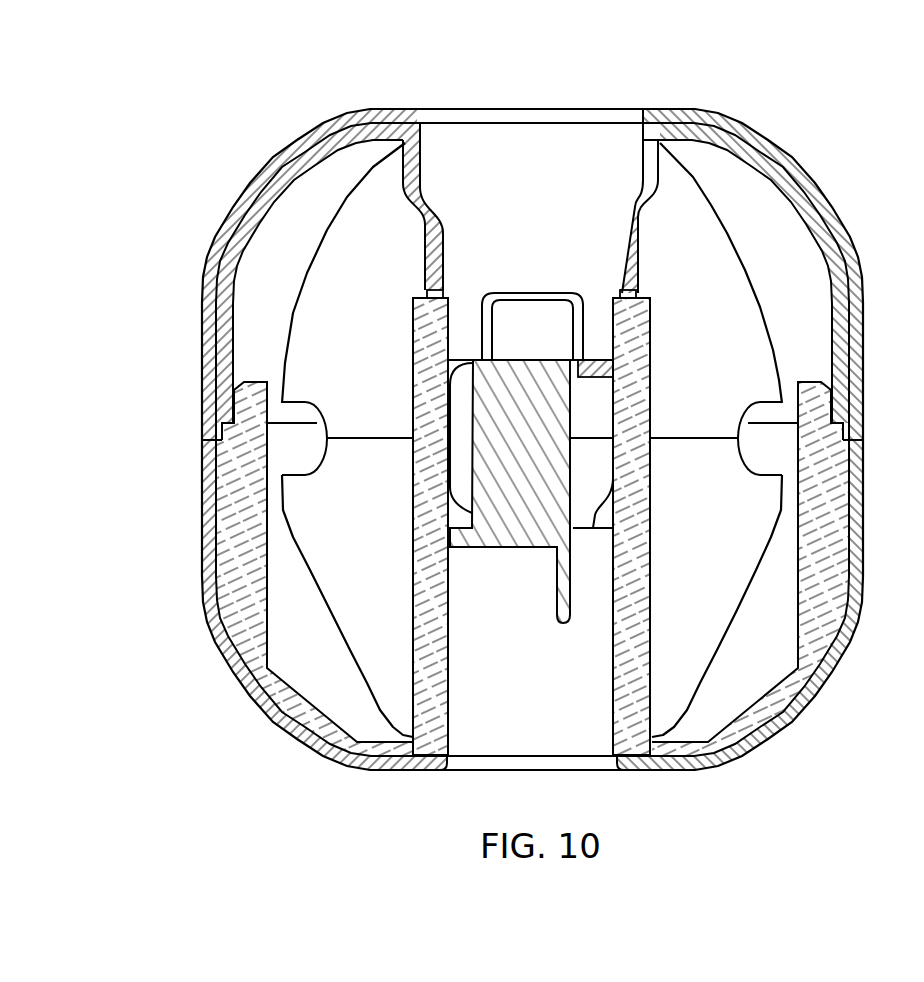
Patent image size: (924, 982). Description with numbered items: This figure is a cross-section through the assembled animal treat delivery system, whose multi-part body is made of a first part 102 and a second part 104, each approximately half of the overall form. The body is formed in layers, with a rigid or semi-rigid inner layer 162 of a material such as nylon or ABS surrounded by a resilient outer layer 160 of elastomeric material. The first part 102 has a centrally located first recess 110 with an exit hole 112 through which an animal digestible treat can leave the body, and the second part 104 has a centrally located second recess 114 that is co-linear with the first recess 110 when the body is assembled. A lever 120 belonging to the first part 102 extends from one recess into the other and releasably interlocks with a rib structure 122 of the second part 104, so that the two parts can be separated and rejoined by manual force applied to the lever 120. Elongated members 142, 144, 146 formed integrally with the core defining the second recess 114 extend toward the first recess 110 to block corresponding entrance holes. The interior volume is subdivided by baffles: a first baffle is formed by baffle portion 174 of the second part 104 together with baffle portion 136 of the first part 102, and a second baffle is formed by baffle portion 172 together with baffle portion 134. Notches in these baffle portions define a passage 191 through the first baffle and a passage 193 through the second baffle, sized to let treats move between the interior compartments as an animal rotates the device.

The first part 102 is at (776, 136).
The second part 104 is at (391, 776).
The first recess 110 is at (537, 437).
The exit hole 112 is at (636, 154).
The second recess 114 is at (590, 778).
The lever 120 is at (557, 613).
The rib structure 122 is at (487, 533).
The baffle portion 134 is at (710, 281).
The baffle portion 136 is at (382, 397).
The elongated member 142 is at (412, 347).
The elongated member 144 is at (552, 341).
The elongated member 146 is at (651, 347).
The outer layer 160 is at (822, 194).
The inner layer 162 is at (842, 282).
The baffle portion 172 is at (728, 551).
The baffle portion 174 is at (386, 551).
The passage 191 is at (283, 440).
The passage 193 is at (780, 440).